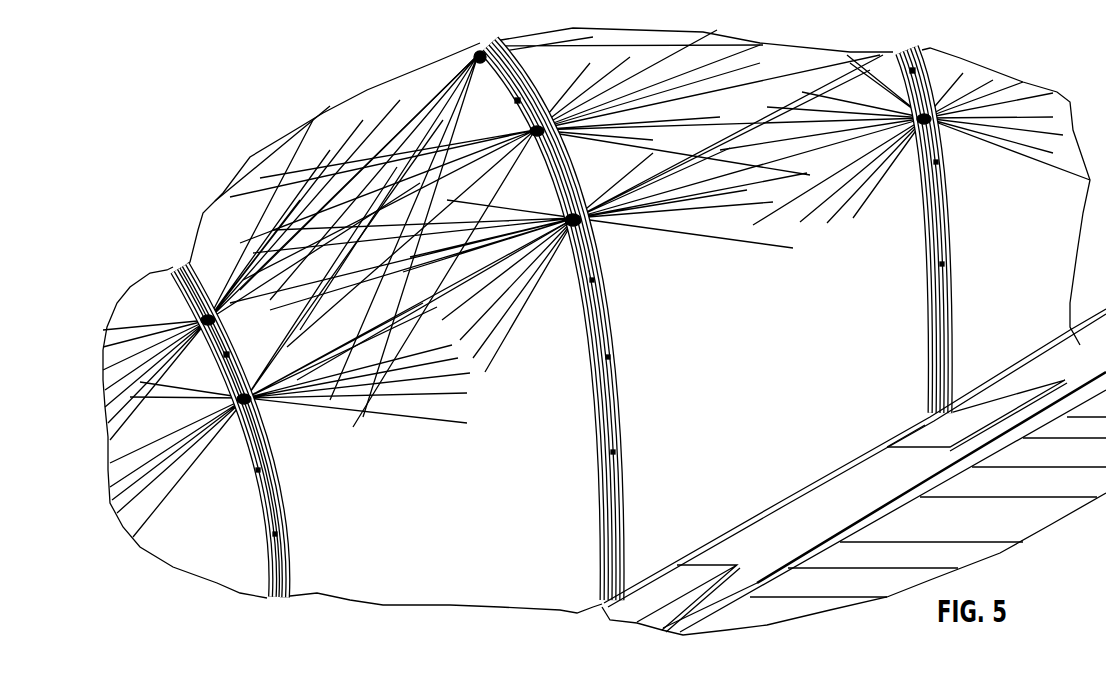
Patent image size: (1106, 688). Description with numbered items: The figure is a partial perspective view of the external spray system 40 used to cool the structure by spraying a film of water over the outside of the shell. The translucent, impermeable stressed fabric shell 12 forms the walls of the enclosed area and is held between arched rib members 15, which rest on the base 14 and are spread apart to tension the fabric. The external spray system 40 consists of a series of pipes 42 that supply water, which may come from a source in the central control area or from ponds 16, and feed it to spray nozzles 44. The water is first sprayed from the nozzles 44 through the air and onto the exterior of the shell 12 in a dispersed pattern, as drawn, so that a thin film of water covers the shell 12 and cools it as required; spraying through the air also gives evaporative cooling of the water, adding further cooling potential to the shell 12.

The stressed fabric shell 12 is at (433, 481).
The base 14 is at (825, 527).
The arched rib members 15 is at (290, 566).
The ponds 16 is at (956, 535).
The external spray system 40 is at (522, 352).
The pipes 42 is at (622, 411).
The spray nozzles 44 is at (579, 212).